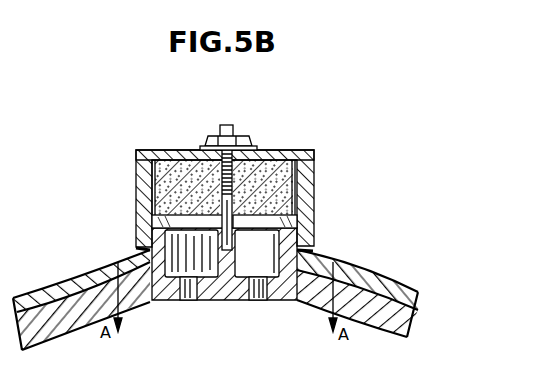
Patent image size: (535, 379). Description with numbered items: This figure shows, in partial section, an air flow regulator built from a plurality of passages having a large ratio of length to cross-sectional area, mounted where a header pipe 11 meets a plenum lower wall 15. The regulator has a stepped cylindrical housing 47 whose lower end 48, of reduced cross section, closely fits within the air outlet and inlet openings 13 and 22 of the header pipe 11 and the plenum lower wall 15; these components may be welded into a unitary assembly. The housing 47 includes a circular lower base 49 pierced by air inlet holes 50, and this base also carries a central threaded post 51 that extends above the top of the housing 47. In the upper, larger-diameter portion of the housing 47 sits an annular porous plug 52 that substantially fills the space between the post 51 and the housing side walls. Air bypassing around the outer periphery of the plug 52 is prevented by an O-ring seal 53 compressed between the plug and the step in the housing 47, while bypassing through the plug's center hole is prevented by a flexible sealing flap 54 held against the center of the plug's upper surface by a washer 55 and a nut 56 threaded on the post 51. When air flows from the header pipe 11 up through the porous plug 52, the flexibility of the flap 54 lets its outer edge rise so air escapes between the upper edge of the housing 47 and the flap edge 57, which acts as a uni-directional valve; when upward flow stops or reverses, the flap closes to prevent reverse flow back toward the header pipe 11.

The header pipe 11 is at (70, 322).
The air outlet opening 13 is at (308, 300).
The plenum lower wall 15 is at (38, 294).
The inlet opening 22 is at (148, 300).
The stepped cylindrical housing 47 is at (132, 211).
The lower end 48 is at (178, 302).
The circular lower base 49 is at (236, 300).
The air inlet holes 50 is at (197, 300).
The central threaded post 51 is at (226, 125).
The annular porous plug 52 is at (172, 190).
The O-ring seal 53 is at (150, 224).
The flexible sealing flap 54 is at (176, 150).
The washer 55 is at (258, 147).
The nut 56 is at (248, 140).
The flap edge 57 is at (137, 150).